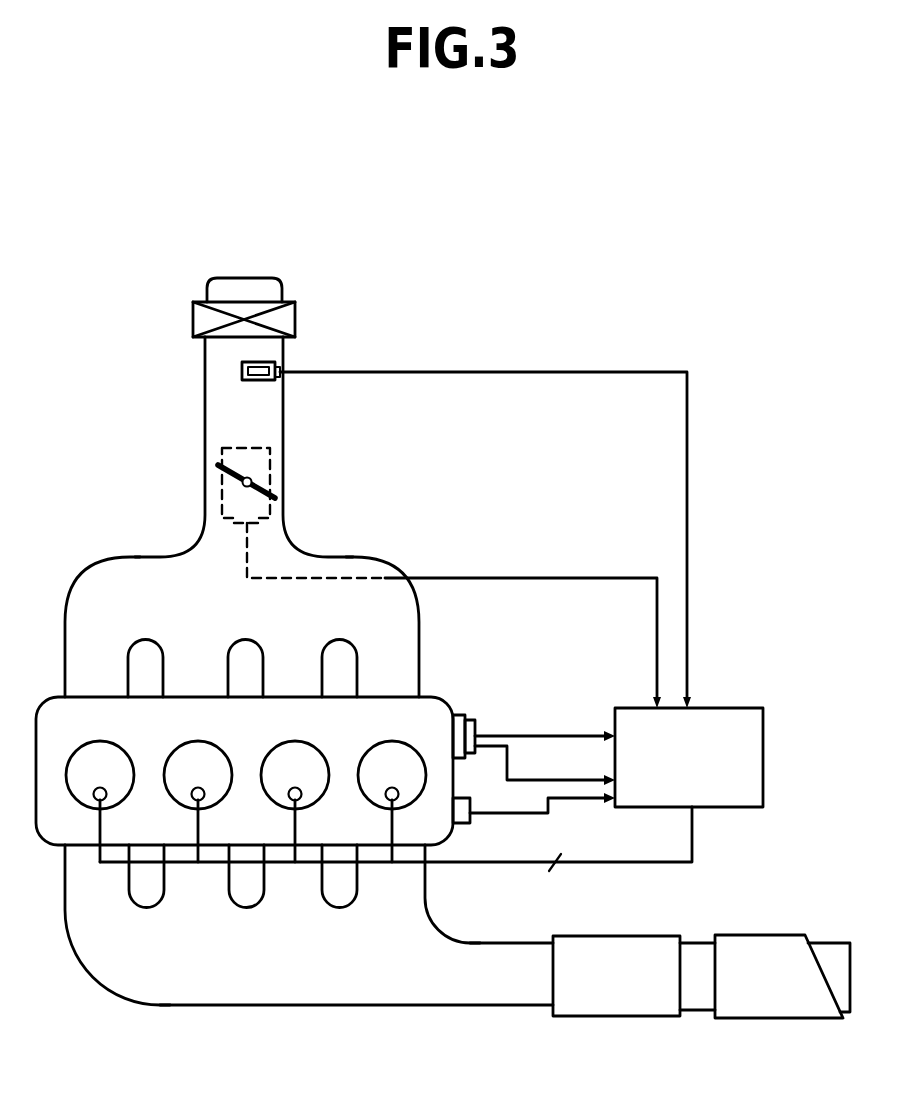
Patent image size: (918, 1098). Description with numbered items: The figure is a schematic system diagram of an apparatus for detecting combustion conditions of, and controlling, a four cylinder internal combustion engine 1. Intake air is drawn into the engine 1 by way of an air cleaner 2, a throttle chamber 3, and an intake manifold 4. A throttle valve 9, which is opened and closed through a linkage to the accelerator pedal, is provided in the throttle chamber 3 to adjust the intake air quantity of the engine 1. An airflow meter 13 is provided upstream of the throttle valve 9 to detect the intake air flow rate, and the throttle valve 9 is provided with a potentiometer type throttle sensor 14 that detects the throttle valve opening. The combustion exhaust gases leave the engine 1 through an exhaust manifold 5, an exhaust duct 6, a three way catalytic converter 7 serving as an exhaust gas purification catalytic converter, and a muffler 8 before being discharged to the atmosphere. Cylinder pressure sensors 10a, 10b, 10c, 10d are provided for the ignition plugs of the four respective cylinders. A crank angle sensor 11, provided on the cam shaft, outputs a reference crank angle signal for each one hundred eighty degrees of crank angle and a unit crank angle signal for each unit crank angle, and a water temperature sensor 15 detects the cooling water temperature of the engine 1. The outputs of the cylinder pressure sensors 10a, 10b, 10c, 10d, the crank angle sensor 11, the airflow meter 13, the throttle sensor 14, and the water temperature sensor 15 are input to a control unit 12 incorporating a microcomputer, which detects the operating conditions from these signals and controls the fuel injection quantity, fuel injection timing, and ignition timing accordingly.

The internal combustion engine 1 is at (408, 548).
The air cleaner 2 is at (193, 320).
The throttle chamber 3 is at (283, 468).
The intake manifold 4 is at (90, 585).
The exhaust manifold 5 is at (97, 948).
The exhaust duct 6 is at (466, 1006).
The three way catalytic converter 7 is at (632, 1016).
The muffler 8 is at (790, 1018).
The throttle valve 9 is at (222, 478).
The cylinder pressure sensor 10a is at (93, 795).
The cylinder pressure sensor 10b is at (191, 795).
The cylinder pressure sensor 10c is at (288, 795).
The cylinder pressure sensor 10d is at (385, 795).
The crank angle sensor 11 is at (463, 715).
The control unit 12 is at (712, 708).
The airflow meter 13 is at (263, 361).
The throttle sensor 14 is at (222, 505).
The water temperature sensor 15 is at (471, 822).